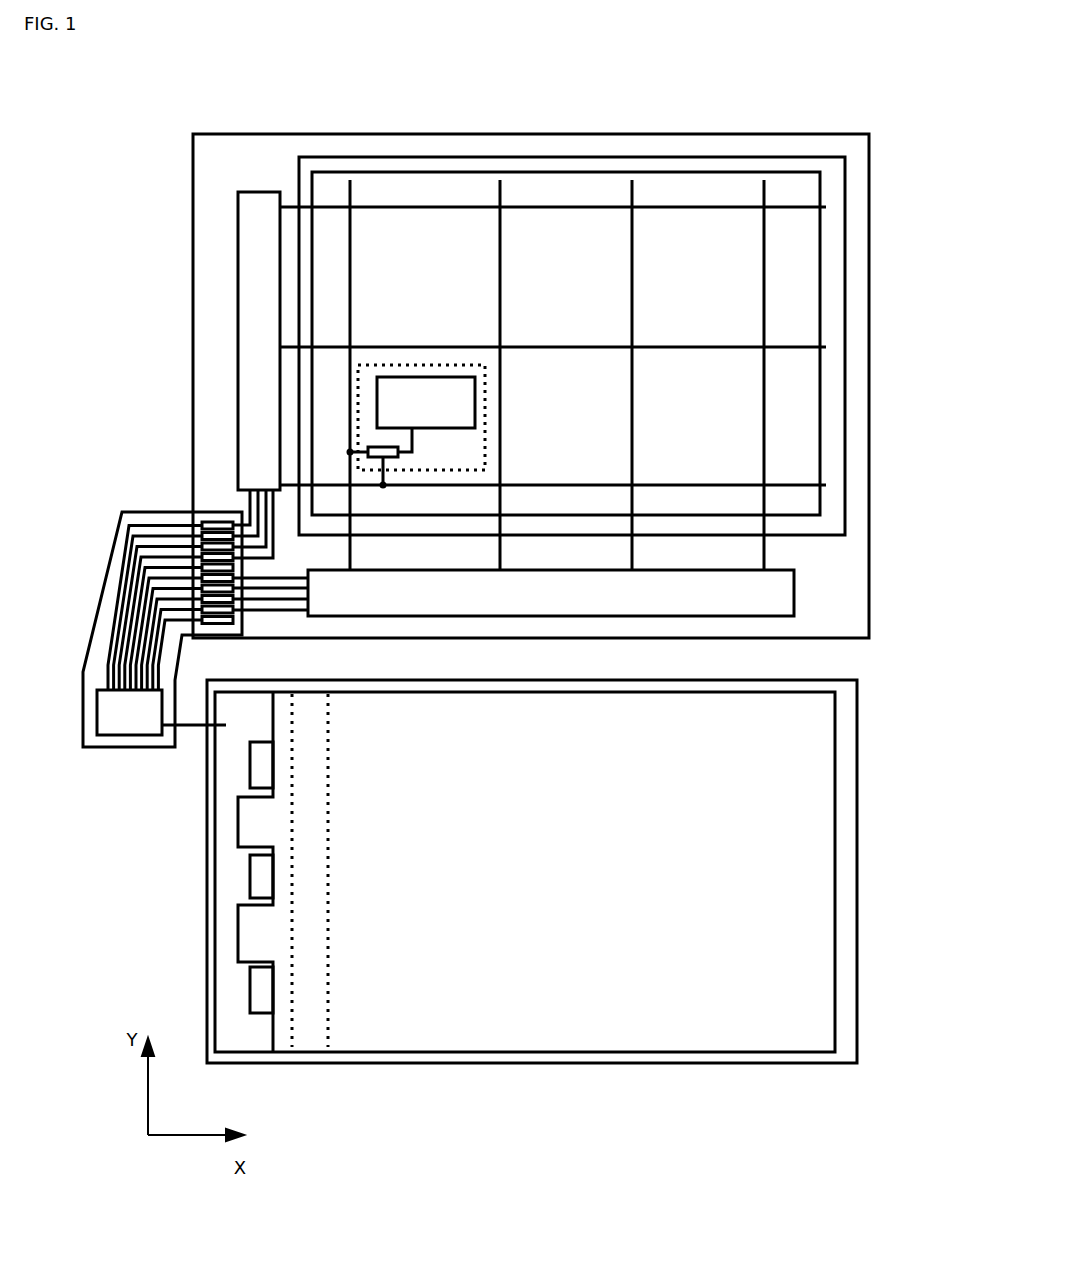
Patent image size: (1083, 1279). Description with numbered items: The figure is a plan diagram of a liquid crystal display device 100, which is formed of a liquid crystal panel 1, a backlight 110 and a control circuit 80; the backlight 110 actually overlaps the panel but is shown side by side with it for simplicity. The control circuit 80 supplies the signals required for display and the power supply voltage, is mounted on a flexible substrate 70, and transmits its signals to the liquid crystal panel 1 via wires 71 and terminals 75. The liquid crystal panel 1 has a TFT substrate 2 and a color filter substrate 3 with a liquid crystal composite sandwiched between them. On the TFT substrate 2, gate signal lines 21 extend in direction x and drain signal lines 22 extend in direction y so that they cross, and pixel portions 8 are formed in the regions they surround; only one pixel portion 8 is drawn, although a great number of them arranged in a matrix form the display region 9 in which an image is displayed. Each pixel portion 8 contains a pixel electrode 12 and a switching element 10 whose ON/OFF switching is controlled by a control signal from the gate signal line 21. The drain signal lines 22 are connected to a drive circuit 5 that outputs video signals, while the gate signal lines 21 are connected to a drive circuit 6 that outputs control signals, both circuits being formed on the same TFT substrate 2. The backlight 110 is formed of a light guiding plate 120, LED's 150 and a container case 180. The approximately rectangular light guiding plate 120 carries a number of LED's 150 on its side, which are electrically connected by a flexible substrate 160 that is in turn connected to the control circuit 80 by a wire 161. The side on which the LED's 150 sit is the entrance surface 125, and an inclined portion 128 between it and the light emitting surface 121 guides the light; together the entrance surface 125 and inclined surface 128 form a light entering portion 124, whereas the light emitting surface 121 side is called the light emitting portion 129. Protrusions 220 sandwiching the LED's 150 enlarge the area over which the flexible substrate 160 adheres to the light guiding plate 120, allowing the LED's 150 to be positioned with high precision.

The liquid crystal panel 1 is at (549, 132).
The TFT substrate 2 is at (310, 138).
The color filter substrate 3 is at (390, 158).
The display region 9 is at (679, 182).
The drive circuit 6 is at (250, 190).
The drive circuit 5 is at (796, 590).
The gate signal line 21 is at (545, 346).
The drain signal line 22 is at (352, 290).
The pixel portion 8 is at (488, 384).
The pixel electrode 12 is at (433, 404).
The switching element 10 is at (400, 452).
The flexible substrate 70 is at (152, 511).
The wire 71 is at (132, 522).
The terminal 75 is at (215, 523).
The control circuit 80 is at (113, 737).
The wire 161 is at (186, 727).
The liquid crystal display device 100 is at (566, 1095).
The backlight 110 is at (630, 1066).
The light guiding plate 120 is at (772, 1053).
The light emitting surface 121 is at (683, 965).
The container case 180 is at (500, 1055).
The light entering portion 124 is at (282, 1033).
The inclined portion 128 is at (318, 1035).
The light emitting portion 129 is at (410, 1038).
The protrusion 220 is at (262, 822).
The entrance surface 125 is at (270, 866).
The flexible substrate 160 is at (228, 932).
The LED 150 is at (252, 988).